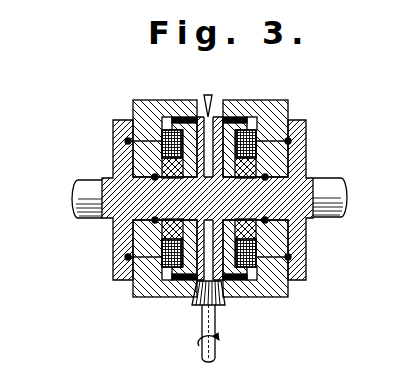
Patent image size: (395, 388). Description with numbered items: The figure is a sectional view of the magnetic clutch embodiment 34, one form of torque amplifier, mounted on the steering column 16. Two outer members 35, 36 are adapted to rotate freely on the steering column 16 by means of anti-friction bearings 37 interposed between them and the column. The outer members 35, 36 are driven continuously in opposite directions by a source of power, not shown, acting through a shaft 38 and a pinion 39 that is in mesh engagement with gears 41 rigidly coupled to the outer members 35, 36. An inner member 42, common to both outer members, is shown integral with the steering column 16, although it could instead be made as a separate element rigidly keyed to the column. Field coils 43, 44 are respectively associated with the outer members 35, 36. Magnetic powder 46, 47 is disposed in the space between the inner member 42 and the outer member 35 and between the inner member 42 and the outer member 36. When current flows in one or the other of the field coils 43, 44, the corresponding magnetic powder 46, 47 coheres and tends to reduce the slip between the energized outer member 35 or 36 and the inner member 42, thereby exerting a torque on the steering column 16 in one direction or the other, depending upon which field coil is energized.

The steering column 16 is at (330, 183).
The magnetic clutch embodiment 34 is at (330, 116).
The outer member 35 is at (132, 105).
The outer member 36 is at (290, 100).
The anti-friction bearings 37 is at (125, 141).
The shaft 38 is at (216, 356).
The pinion 39 is at (222, 302).
The gears 41 is at (207, 95).
The inner member 42 is at (221, 112).
The field coil 43 is at (170, 100).
The field coil 44 is at (241, 100).
The magnetic powder 46 is at (183, 100).
The magnetic powder 47 is at (234, 116).